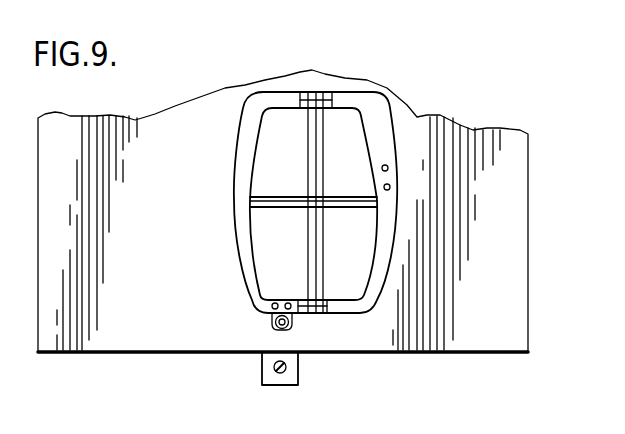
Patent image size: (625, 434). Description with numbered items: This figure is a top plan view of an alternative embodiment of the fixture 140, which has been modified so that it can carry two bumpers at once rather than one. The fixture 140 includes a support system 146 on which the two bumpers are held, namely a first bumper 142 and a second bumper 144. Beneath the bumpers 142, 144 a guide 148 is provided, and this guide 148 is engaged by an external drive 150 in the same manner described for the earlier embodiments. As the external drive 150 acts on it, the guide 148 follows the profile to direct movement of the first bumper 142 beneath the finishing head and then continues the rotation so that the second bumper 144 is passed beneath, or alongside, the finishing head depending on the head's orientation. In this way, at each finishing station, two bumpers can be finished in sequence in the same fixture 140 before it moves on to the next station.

The fixture 140 is at (328, 92).
The first bumper 142 is at (392, 143).
The second bumper 144 is at (248, 150).
The support system 146 is at (310, 221).
The guide 148 is at (322, 313).
The external drive 150 is at (268, 328).